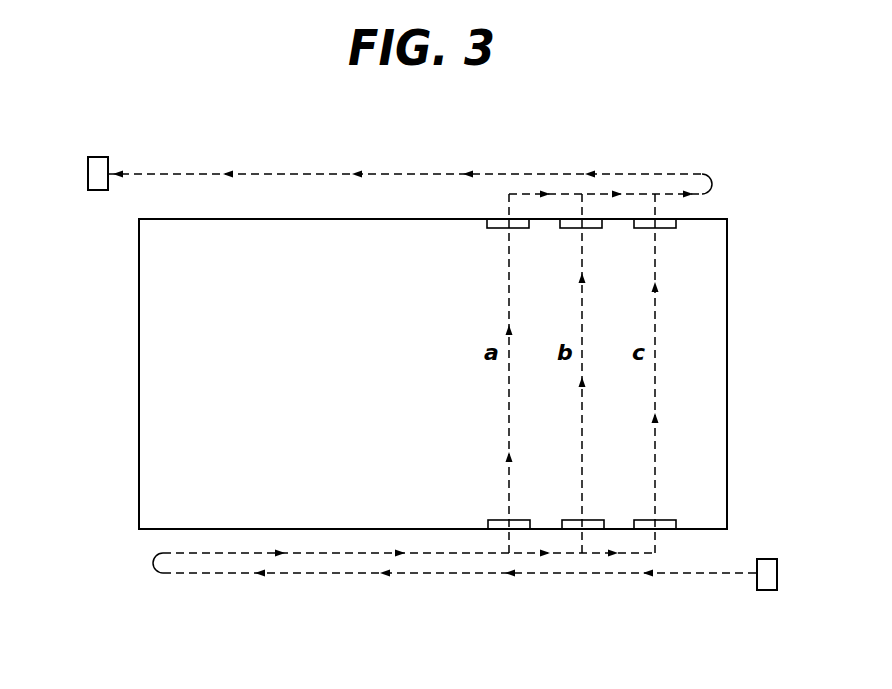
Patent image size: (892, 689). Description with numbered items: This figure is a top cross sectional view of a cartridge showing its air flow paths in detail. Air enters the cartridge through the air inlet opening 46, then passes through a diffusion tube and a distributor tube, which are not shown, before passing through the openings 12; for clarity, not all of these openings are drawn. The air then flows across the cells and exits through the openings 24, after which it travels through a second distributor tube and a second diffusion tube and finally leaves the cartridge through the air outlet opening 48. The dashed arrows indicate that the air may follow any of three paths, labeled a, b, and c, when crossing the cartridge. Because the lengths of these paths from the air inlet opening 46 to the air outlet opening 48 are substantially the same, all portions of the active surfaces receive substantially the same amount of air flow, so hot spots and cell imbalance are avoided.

The openings 12 is at (497, 520).
The openings 24 is at (494, 229).
The air inlet opening 46 is at (777, 582).
The air outlet opening 48 is at (93, 157).